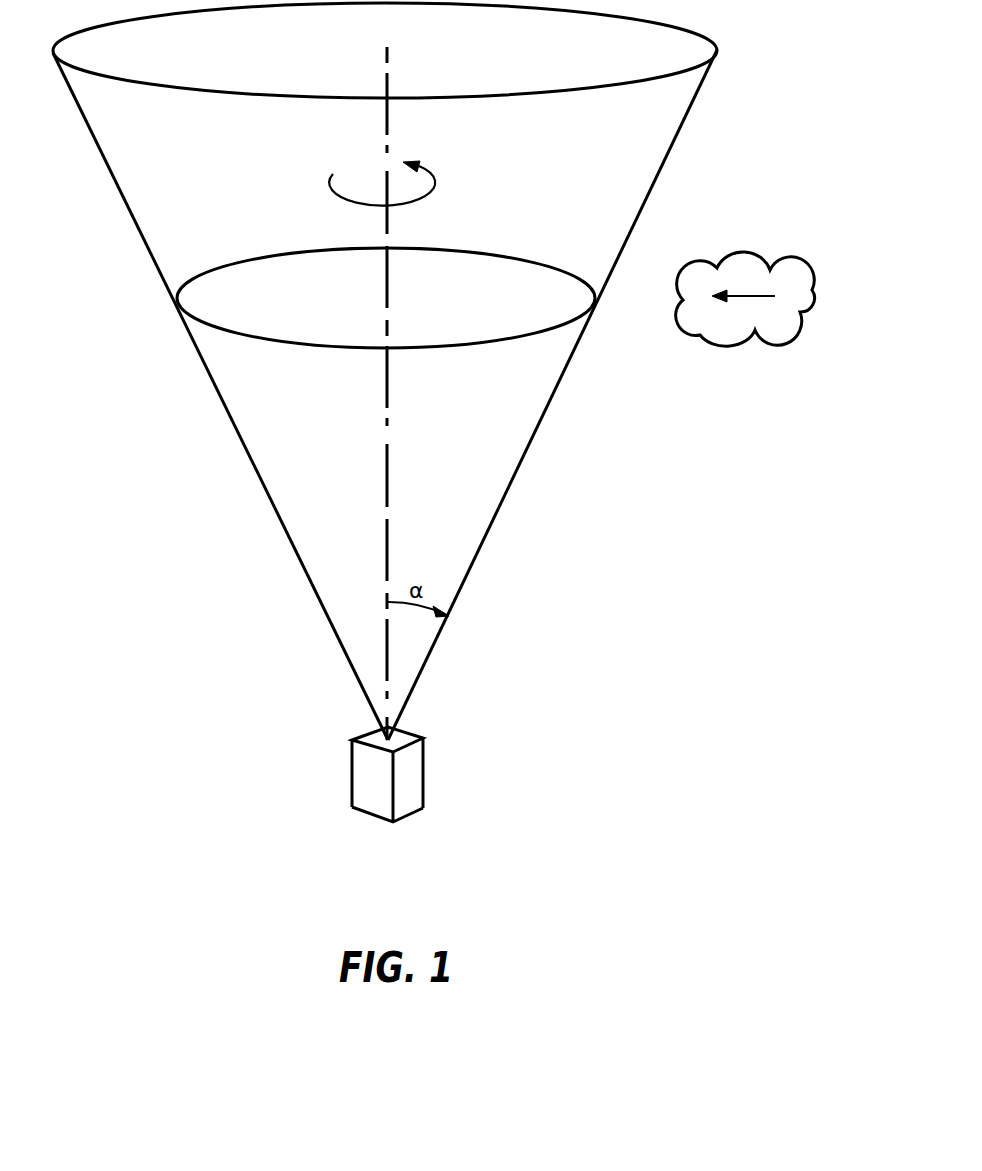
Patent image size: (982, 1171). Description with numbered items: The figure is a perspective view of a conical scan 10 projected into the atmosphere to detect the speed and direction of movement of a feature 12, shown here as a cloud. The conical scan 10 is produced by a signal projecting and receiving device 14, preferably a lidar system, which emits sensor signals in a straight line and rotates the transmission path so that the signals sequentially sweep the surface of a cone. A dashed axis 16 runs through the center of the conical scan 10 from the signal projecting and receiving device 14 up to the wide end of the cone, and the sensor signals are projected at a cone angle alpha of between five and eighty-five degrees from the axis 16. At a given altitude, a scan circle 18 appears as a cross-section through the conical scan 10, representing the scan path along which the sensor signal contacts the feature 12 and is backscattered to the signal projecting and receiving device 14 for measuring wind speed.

The conical scan 10 is at (698, 98).
The feature 12 is at (813, 283).
The signal projecting and receiving device 14 is at (409, 778).
The axis 16 is at (388, 520).
The scan circle 18 is at (597, 290).